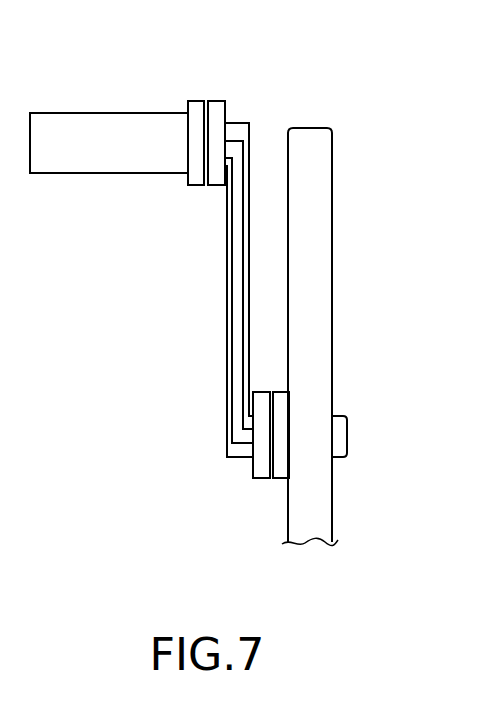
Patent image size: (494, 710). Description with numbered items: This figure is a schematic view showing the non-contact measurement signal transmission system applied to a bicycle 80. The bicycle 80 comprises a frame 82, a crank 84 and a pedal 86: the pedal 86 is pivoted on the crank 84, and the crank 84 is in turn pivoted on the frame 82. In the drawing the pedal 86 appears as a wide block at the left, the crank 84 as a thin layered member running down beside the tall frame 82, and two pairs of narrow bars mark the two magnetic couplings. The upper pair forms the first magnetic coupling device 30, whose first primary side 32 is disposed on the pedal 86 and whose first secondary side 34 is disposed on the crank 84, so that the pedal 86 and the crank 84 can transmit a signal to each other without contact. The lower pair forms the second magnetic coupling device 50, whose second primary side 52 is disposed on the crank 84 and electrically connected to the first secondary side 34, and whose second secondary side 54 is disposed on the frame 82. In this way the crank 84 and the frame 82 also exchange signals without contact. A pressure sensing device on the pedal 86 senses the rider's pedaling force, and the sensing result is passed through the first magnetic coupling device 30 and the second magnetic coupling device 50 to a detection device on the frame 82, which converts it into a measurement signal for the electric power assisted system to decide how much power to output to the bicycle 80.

The first magnetic coupling device 30 is at (211, 94).
The first primary side 32 is at (197, 101).
The first secondary side 34 is at (228, 117).
The second magnetic coupling device 50 is at (245, 505).
The second primary side 52 is at (263, 478).
The second secondary side 54 is at (280, 478).
The bicycle 80 is at (444, 48).
The frame 82 is at (316, 234).
The crank 84 is at (238, 297).
The pedal 86 is at (105, 118).